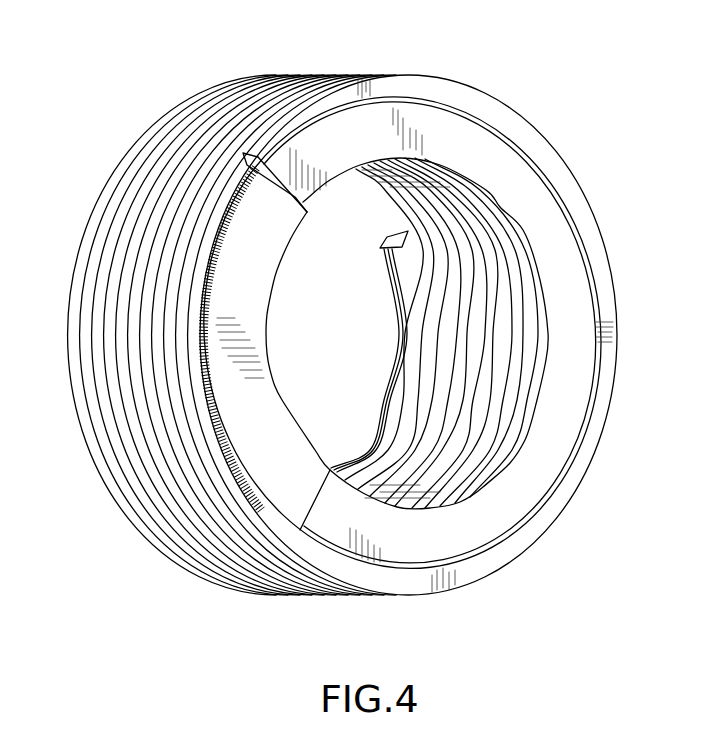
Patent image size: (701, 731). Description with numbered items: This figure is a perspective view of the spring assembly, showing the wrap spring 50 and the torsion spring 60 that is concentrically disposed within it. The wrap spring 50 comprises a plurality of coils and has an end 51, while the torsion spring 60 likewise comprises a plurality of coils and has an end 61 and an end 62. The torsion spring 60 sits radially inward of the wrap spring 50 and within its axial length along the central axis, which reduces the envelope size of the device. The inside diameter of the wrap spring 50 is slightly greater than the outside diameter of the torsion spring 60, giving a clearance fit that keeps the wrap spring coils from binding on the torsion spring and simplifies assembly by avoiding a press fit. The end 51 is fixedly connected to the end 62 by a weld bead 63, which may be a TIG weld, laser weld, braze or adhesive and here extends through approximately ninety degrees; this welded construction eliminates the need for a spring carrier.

The wrap spring 50 is at (200, 95).
The end 51 is at (250, 160).
The torsion spring 60 is at (453, 148).
The end 61 is at (398, 245).
The end 62 is at (285, 202).
The weld bead 63 is at (204, 368).